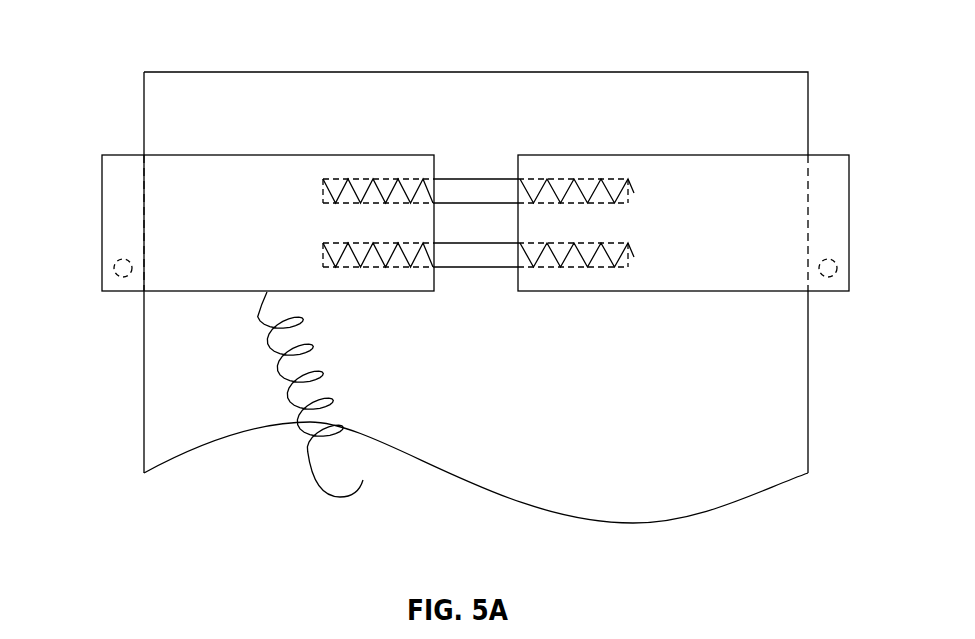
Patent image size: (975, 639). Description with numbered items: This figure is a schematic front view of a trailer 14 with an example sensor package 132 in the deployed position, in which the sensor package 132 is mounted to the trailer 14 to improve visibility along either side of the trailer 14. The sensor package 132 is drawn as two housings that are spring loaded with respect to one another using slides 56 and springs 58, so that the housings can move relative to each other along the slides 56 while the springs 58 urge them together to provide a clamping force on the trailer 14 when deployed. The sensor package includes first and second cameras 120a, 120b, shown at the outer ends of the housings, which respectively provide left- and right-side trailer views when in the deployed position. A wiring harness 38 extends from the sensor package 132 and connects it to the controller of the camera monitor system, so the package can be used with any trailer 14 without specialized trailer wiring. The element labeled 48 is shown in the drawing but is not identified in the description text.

The trailer 14 is at (802, 40).
The sensor package 132 is at (853, 145).
The first camera 120a is at (839, 266).
The second camera 120b is at (114, 264).
The slides 56 is at (465, 188).
The springs 58 is at (328, 249).
The body contour 48 is at (785, 422).
The wiring harness 38 is at (335, 493).